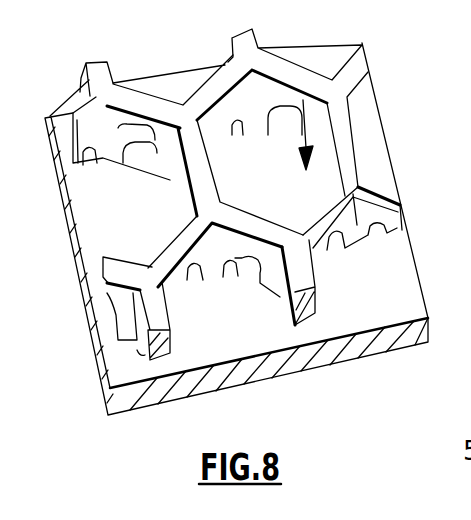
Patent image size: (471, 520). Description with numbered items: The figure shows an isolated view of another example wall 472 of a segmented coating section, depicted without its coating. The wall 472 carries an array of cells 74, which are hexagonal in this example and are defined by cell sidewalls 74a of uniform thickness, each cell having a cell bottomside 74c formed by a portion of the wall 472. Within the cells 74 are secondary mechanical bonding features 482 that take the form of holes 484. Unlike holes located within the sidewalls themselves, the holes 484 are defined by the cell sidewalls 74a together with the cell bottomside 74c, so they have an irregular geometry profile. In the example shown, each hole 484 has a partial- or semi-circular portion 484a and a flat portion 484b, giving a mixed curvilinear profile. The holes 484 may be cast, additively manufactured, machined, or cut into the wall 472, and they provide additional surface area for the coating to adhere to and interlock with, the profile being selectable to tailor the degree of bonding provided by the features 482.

The cells 74 is at (327, 125).
The cell sidewalls 74a is at (303, 100).
The cell bottomside 74c is at (313, 192).
The wall 472 is at (100, 388).
The secondary mechanical bonding features 482 is at (248, 283).
The holes 484 is at (245, 258).
The semi-circular portion 484a is at (143, 123).
The flat portion 484b is at (147, 153).